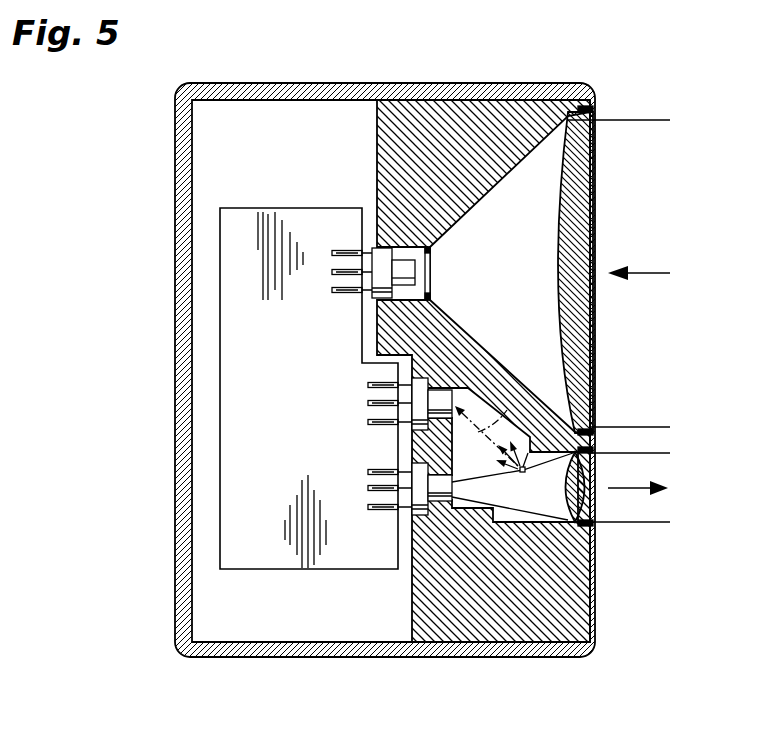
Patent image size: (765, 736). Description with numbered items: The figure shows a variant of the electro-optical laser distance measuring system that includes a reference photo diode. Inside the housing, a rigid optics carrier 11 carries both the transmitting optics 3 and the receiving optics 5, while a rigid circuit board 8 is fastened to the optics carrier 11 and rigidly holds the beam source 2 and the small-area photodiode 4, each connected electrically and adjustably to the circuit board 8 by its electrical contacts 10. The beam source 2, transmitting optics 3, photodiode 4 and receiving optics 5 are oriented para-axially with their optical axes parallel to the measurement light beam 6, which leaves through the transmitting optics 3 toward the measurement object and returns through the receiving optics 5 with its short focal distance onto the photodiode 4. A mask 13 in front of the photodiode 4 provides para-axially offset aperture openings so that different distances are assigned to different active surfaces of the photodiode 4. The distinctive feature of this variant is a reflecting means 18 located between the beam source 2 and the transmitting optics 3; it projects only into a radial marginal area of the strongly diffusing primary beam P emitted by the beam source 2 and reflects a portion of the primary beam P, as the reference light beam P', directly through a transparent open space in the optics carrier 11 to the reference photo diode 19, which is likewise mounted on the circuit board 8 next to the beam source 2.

The beam source 2 is at (415, 470).
The transmitting optics 3 is at (591, 489).
The small-area photodiode 4 is at (388, 255).
The receiving optics 5 is at (585, 237).
The measurement light beam 6 is at (652, 274).
The circuit board 8 is at (267, 552).
The electrical contacts 10 is at (341, 253).
The optics carrier 11 is at (483, 620).
The mask 13 is at (432, 280).
The reflecting means 18 is at (528, 470).
The reference photo diode 19 is at (412, 385).
The primary beam P is at (512, 520).
The reference light beam P' is at (505, 366).